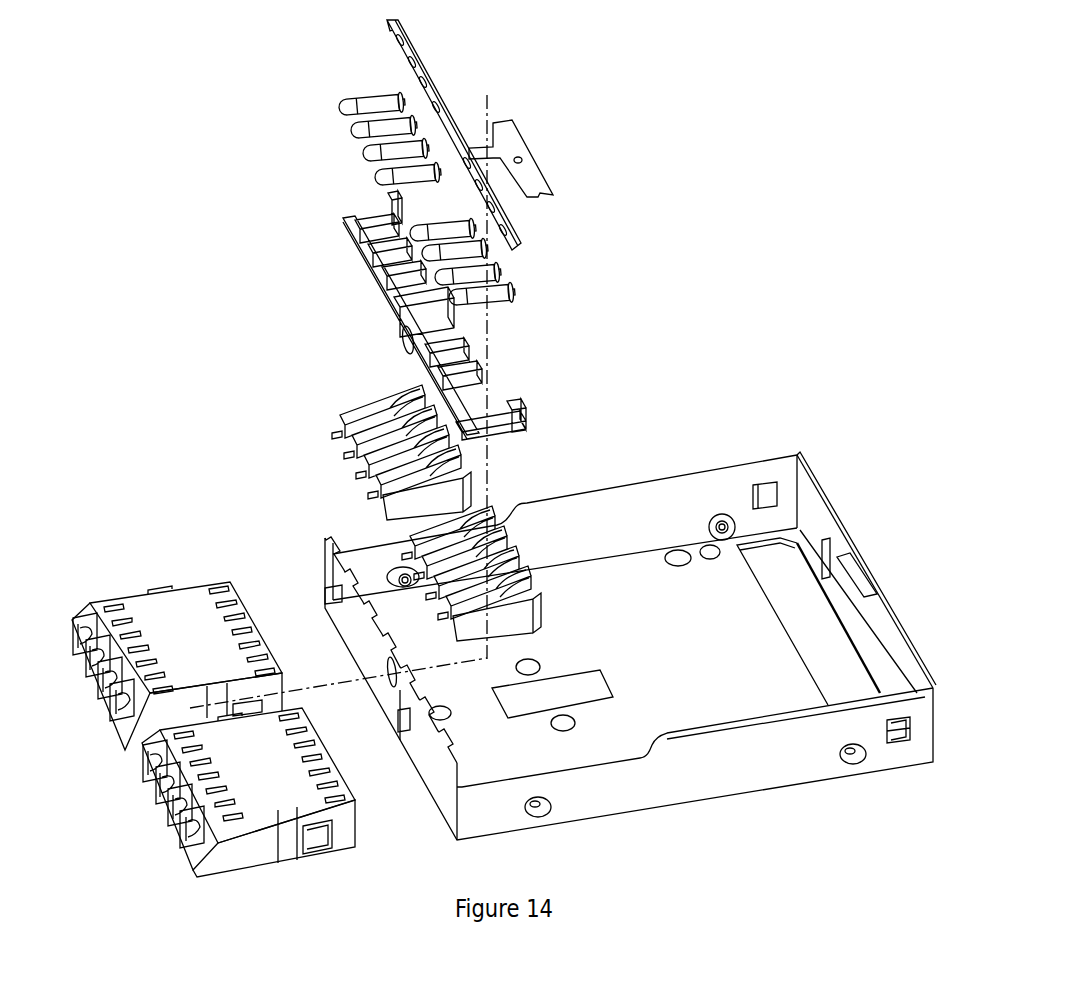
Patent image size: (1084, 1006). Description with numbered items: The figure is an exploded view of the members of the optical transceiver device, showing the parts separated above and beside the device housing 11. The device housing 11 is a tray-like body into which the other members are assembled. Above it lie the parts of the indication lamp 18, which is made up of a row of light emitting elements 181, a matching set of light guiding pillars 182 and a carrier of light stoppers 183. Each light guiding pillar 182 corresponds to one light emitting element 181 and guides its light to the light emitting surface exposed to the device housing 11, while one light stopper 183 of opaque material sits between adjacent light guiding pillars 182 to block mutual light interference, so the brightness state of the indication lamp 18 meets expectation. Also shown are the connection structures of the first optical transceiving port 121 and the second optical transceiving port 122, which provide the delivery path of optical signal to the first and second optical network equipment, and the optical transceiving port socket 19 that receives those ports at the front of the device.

The device housing 11 is at (746, 763).
The indication lamp 18 is at (507, 230).
The light emitting element 181 is at (512, 217).
The light guiding pillar 182 is at (512, 287).
The light stopper 183 is at (610, 243).
The first optical transceiving port 121 is at (360, 408).
The second optical transceiving port 122 is at (373, 490).
The optical transceiving port socket 19 is at (187, 600).